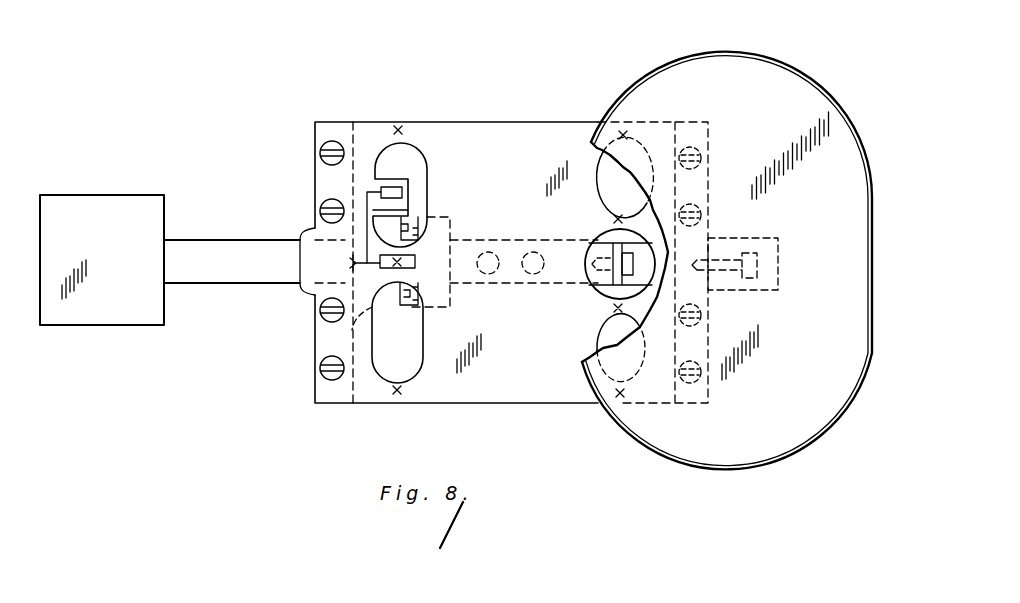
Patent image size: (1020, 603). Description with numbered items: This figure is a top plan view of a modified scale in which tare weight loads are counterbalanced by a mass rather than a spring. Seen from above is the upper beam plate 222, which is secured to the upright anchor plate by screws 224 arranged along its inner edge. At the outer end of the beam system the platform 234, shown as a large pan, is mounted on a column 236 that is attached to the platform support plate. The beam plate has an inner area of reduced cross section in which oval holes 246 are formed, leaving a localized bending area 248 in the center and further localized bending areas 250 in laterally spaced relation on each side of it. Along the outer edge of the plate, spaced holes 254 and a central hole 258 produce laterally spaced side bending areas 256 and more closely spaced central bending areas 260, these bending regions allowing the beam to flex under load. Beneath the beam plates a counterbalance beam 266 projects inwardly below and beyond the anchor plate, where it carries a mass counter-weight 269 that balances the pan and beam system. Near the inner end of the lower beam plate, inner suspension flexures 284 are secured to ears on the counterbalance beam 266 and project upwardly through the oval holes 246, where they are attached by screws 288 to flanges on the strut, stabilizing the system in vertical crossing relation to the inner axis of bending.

The upper beam plate 222 is at (492, 133).
The screws 224 is at (321, 160).
The platform 234 is at (745, 70).
The column 236 is at (730, 292).
The oval holes 246 is at (428, 172).
The localized bending area 248 is at (408, 265).
The localized bending areas 250 is at (396, 126).
The spaced holes 254 is at (598, 160).
The side bending areas 256 is at (627, 134).
The central hole 258 is at (588, 236).
The central bending areas 260 is at (614, 310).
The counterbalance beam 266 is at (247, 272).
The mass counter-weight 269 is at (112, 184).
The inner suspension flexures 284 is at (410, 220).
The screws 288 is at (387, 332).